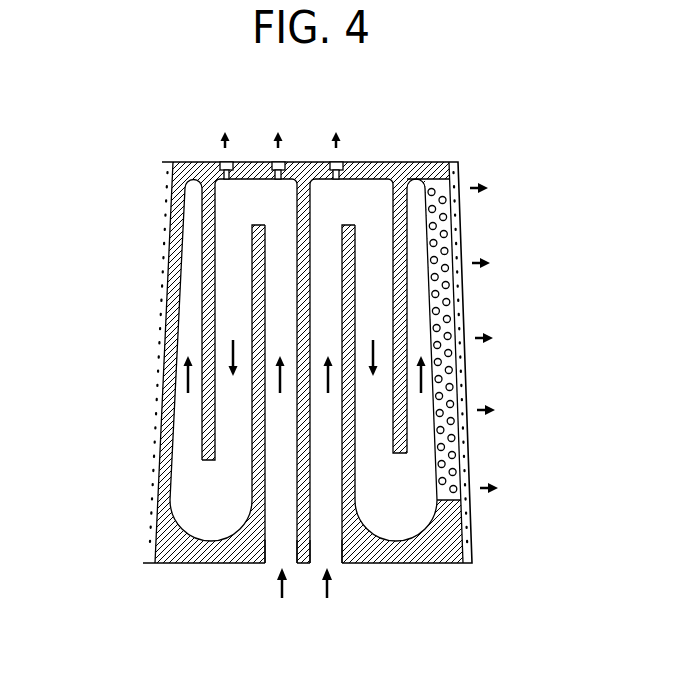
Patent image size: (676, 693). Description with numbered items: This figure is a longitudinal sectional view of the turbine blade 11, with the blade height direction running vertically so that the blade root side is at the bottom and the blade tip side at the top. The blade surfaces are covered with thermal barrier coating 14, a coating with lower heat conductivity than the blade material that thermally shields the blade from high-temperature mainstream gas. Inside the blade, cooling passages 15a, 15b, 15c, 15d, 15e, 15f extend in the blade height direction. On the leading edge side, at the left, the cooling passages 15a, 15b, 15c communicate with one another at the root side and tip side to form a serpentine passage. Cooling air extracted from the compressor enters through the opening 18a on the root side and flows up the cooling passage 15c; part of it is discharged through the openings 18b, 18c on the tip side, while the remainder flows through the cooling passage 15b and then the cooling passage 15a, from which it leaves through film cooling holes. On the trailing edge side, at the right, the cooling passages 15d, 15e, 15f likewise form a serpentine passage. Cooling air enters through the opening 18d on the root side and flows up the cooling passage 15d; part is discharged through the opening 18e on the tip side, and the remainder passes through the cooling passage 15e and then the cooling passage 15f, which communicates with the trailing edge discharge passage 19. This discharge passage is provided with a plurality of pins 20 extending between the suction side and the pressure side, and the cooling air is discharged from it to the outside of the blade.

The turbine blade 11 is at (133, 170).
The thermal barrier coating 14 is at (150, 490).
The cooling passage 15a is at (188, 252).
The cooling passage 15b is at (228, 302).
The cooling passage 15c is at (277, 420).
The cooling passage 15d is at (328, 447).
The cooling passage 15e is at (378, 302).
The cooling passage 15f is at (430, 248).
The opening 18a is at (272, 563).
The opening 18b is at (276, 162).
The opening 18c is at (222, 162).
The opening 18d is at (334, 563).
The opening 18e is at (343, 162).
The trailing edge discharge passage 19 is at (432, 185).
The pins 20 is at (453, 503).